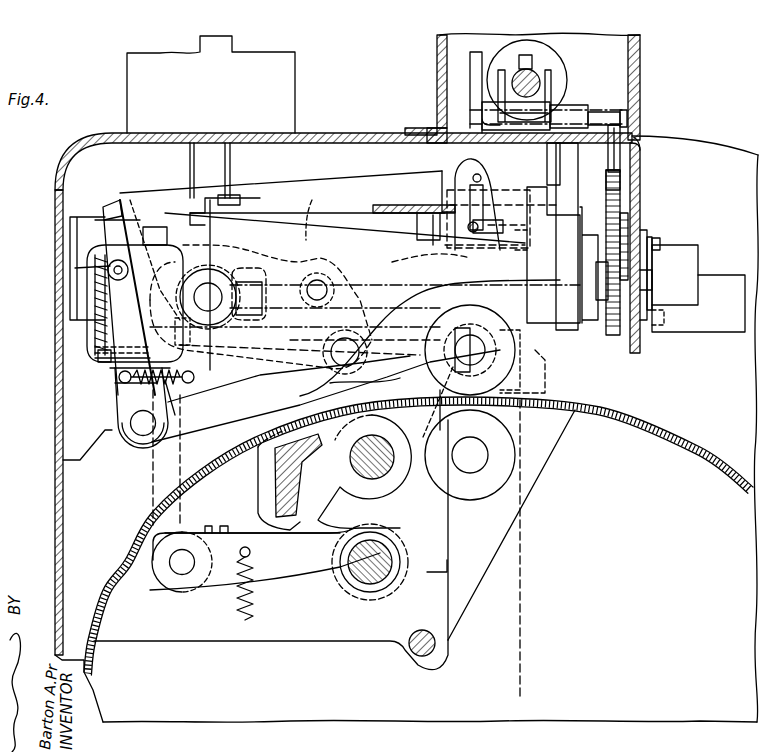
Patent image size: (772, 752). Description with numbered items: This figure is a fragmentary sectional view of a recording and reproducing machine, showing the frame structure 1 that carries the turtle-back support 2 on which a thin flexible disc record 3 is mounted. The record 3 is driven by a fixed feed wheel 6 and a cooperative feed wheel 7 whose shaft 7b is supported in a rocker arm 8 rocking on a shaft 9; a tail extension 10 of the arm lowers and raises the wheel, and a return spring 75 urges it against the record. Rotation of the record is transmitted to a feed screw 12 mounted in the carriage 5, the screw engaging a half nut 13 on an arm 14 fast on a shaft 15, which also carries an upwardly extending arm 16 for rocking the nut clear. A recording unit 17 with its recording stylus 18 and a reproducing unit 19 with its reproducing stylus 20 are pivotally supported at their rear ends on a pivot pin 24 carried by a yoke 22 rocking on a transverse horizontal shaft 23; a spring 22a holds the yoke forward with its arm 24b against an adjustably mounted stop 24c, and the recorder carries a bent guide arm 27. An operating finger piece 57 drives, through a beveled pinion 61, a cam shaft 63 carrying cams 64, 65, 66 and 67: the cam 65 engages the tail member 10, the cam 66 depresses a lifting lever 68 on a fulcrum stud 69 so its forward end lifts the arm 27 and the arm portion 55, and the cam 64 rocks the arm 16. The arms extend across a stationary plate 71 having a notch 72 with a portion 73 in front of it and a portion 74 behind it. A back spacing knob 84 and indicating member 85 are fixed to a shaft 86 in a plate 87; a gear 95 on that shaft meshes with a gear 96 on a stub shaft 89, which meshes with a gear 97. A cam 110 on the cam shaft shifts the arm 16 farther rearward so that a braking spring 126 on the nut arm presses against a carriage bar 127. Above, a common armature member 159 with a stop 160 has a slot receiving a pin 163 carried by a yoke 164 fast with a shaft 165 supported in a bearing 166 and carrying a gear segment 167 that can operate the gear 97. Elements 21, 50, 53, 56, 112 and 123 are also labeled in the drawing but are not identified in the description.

The frame structure 1 is at (52, 488).
The turtle-back support 2 is at (122, 548).
The disc record 3 is at (260, 432).
The carriage 5 is at (262, 485).
The fixed feed wheel 6 is at (522, 452).
The cooperative feed wheel 7 is at (518, 352).
The shaft 7b is at (470, 344).
The rocker arm 8 is at (405, 373).
The shaft 9 is at (346, 338).
The tail extension 10 is at (108, 362).
The feed screw 12 is at (372, 575).
The half nut 13 is at (363, 525).
The nut arm 14 is at (280, 570).
The shaft 15 is at (178, 565).
The upwardly extending arm 16 is at (152, 470).
The recording unit 17 is at (372, 178).
The recording stylus 18 is at (438, 388).
The reproducing unit 19 is at (545, 368).
The reproducing stylus 20 is at (462, 404).
The base plate 21 is at (486, 496).
The yoke 22 is at (122, 402).
The spring 22a is at (175, 385).
The transverse horizontal shaft 23 is at (140, 437).
The pivot pin 24 is at (95, 262).
The arm 24b is at (110, 204).
The adjustably mounted stop 24c is at (222, 190).
The bent guide arm 27 is at (424, 200).
The body 50 is at (425, 300).
The link 53 is at (300, 212).
The arm portion 55 is at (480, 175).
The pin 56 is at (488, 228).
The operating finger piece 57 is at (725, 288).
The beveled pinion 61 is at (244, 280).
The cam shaft 63 is at (212, 283).
The cam 64 is at (208, 370).
The cam 65 is at (255, 255).
The cam 66 is at (265, 278).
The cam 67 is at (148, 230).
The lifting lever 68 is at (432, 262).
The fulcrum stud 69 is at (328, 287).
The stationary plate 71 is at (286, 195).
The notch 72 is at (424, 215).
The plate portion 73 is at (560, 222).
The plate portion 74 is at (352, 214).
The return spring 75 is at (96, 330).
The back spacing knob 84 is at (692, 262).
The indicating member 85 is at (660, 242).
The shaft 86 is at (645, 278).
The plate 87 is at (600, 276).
The stub shaft 89 is at (628, 236).
The gear 95 is at (608, 322).
The gear 96 is at (622, 218).
The gear 97 is at (622, 180).
The cam 110 is at (144, 228).
The upper housing 112 is at (222, 52).
The bracket 123 is at (198, 152).
The braking spring 126 is at (265, 528).
The carriage bar 127 is at (285, 466).
The armature member 159 is at (546, 78).
The stop 160 is at (534, 62).
The pin 163 is at (568, 91).
The yoke 164 is at (500, 97).
The shaft 165 is at (626, 118).
The bearing 166 is at (557, 145).
The gear segment 167 is at (610, 158).